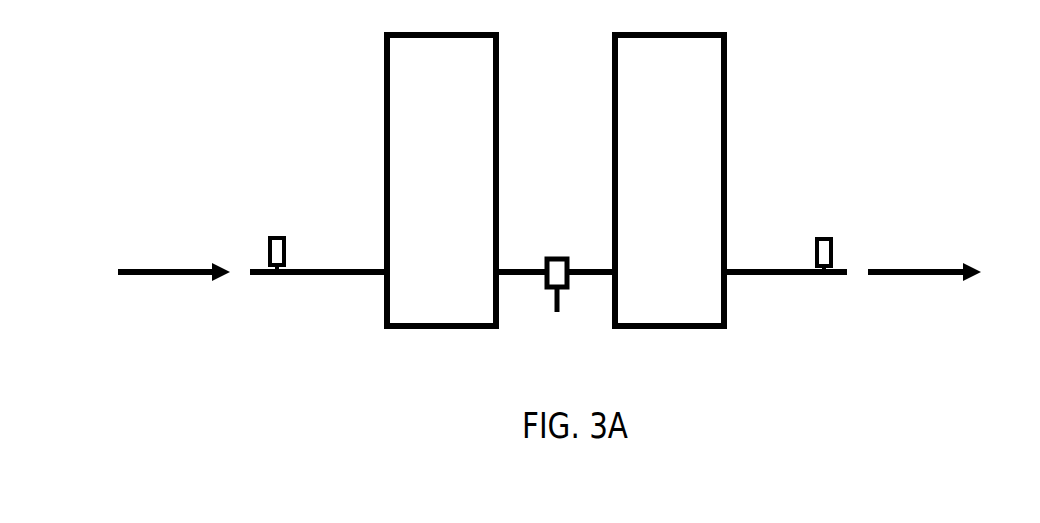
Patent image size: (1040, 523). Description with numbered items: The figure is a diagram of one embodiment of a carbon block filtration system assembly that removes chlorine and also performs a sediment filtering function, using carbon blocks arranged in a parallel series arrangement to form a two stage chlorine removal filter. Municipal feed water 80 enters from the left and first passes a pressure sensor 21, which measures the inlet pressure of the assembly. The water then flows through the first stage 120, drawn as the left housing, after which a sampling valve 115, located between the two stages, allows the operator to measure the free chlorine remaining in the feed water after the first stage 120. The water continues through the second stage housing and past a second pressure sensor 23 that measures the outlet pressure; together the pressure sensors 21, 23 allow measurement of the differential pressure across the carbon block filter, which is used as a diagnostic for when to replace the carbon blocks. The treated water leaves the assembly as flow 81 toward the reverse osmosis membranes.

The feed water 80 is at (157, 258).
The pressure sensor 21 is at (284, 234).
The sampling valve 115 is at (556, 246).
The first stage 120 is at (557, 323).
The pressure sensor 23 is at (831, 236).
The flow 81 is at (942, 260).